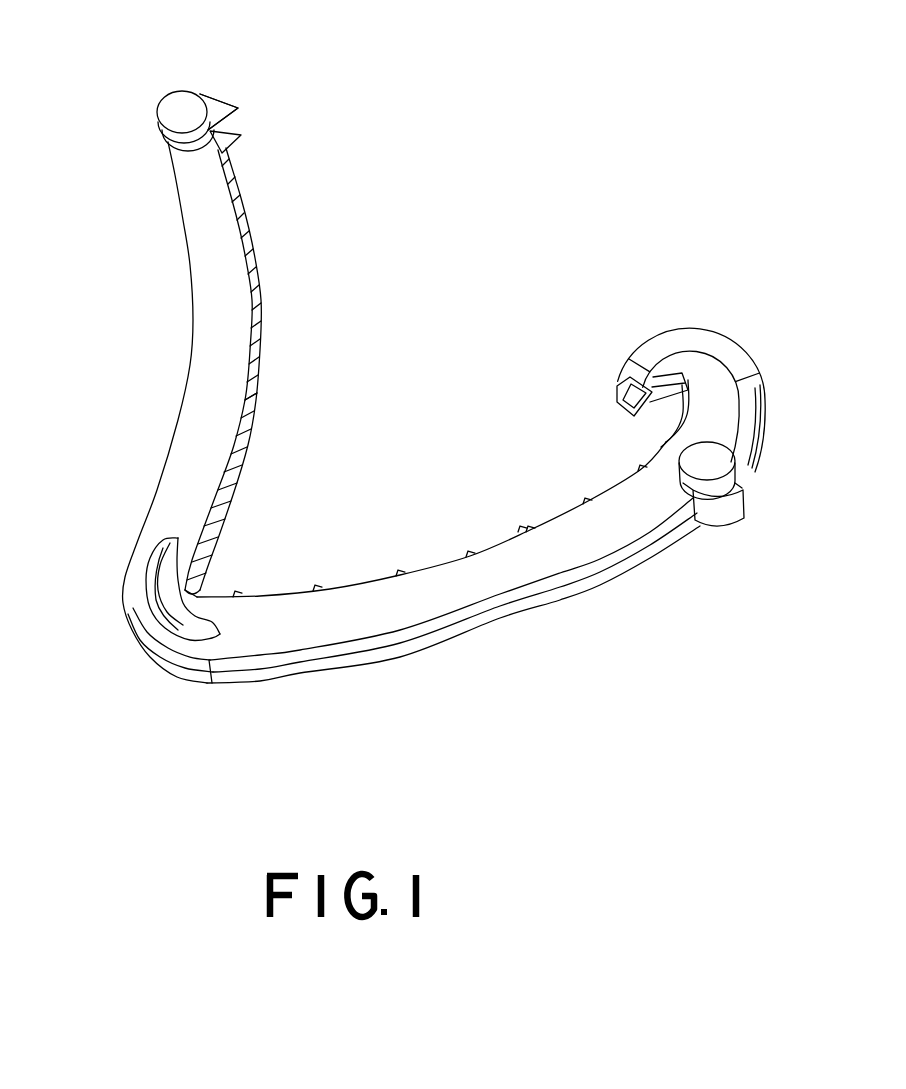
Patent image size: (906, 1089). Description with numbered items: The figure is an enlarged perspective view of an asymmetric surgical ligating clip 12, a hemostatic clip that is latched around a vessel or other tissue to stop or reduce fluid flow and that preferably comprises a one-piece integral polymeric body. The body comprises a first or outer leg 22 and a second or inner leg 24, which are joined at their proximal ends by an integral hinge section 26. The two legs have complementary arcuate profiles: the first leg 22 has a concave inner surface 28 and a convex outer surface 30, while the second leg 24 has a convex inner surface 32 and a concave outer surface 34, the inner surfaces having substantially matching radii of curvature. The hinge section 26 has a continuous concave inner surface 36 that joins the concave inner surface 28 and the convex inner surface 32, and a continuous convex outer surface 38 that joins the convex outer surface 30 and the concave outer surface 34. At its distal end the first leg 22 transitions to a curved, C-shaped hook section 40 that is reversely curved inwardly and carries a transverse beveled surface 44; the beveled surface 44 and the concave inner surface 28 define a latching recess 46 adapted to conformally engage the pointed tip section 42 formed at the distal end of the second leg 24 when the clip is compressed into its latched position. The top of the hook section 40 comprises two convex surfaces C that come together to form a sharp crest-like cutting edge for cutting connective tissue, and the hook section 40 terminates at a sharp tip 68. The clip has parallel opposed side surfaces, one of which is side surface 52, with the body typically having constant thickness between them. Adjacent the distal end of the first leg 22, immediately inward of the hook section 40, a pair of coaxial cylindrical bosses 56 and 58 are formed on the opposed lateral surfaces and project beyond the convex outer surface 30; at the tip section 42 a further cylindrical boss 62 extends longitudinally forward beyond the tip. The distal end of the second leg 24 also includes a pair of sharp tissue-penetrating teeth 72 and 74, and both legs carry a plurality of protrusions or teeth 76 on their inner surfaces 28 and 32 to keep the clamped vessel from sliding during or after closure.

The surgical clip 12 is at (535, 103).
The first or outer leg 22 is at (461, 670).
The second or inner leg 24 is at (166, 383).
The hinge section 26 is at (115, 666).
The concave inner surface 28 is at (342, 590).
The convex outer surface 30 is at (314, 670).
The convex inner surface 32 is at (263, 298).
The concave outer surface 34 is at (185, 242).
The continuous concave inner surface 36 is at (200, 596).
The continuous convex outer surface 38 is at (124, 611).
The C-shaped hook section 40 is at (756, 322).
The pointed tip section 42 is at (220, 82).
The transverse beveled surface 44 is at (648, 417).
The latching recess 46 is at (697, 385).
The side surface 52 is at (492, 593).
The cylindrical boss 56 is at (707, 462).
The cylindrical boss 58 is at (740, 520).
The cylindrical boss 62 is at (168, 115).
The sharp tip 68 is at (613, 413).
The sharp tissue-penetrating tooth 72 is at (245, 108).
The sharp tissue-penetrating tooth 74 is at (242, 138).
The protrusions or teeth 76 is at (261, 402).
The convex surface C is at (747, 358).